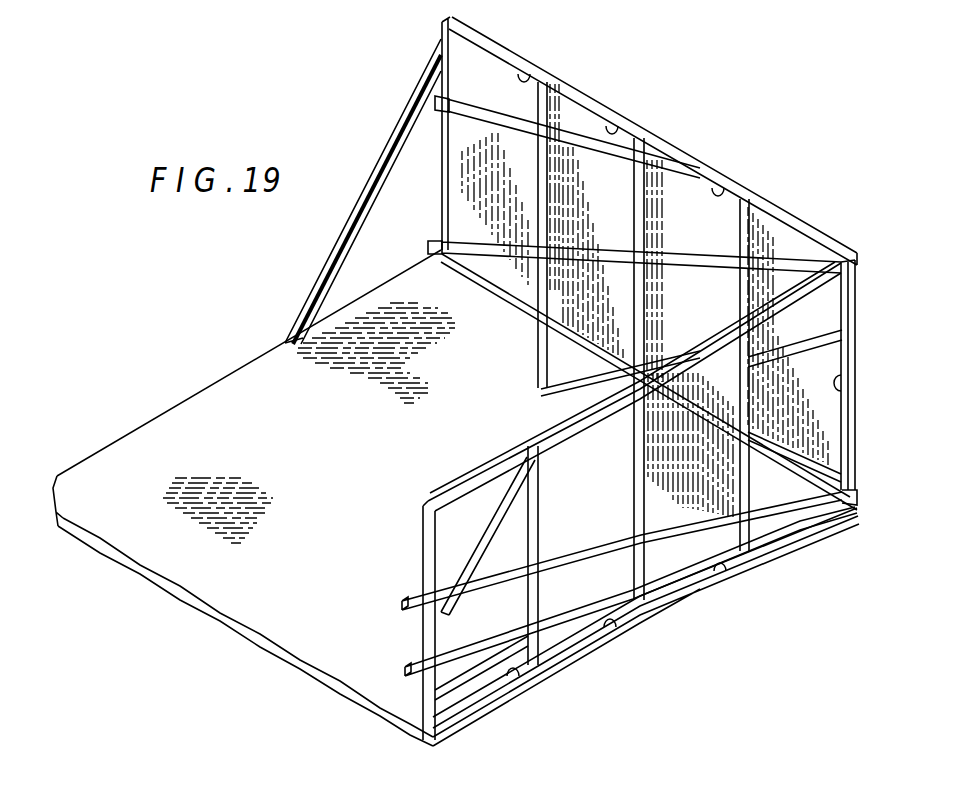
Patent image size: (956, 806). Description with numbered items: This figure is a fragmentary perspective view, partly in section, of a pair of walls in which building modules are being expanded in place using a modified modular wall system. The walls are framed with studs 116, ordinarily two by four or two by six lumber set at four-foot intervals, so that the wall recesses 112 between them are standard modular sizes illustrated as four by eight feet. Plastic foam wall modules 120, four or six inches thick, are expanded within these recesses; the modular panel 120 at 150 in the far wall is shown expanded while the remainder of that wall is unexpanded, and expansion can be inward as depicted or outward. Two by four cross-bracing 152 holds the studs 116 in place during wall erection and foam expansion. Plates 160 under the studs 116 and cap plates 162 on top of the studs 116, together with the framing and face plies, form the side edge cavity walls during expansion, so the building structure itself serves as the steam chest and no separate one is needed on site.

The wall recess 112 is at (541, 83).
The stud 116 is at (441, 53).
The wall module 120 is at (468, 95).
The expanded modular panel location 150 is at (477, 50).
The cross-bracing 152 is at (462, 123).
The plate 160 is at (836, 505).
The cap plate 162 is at (610, 108).